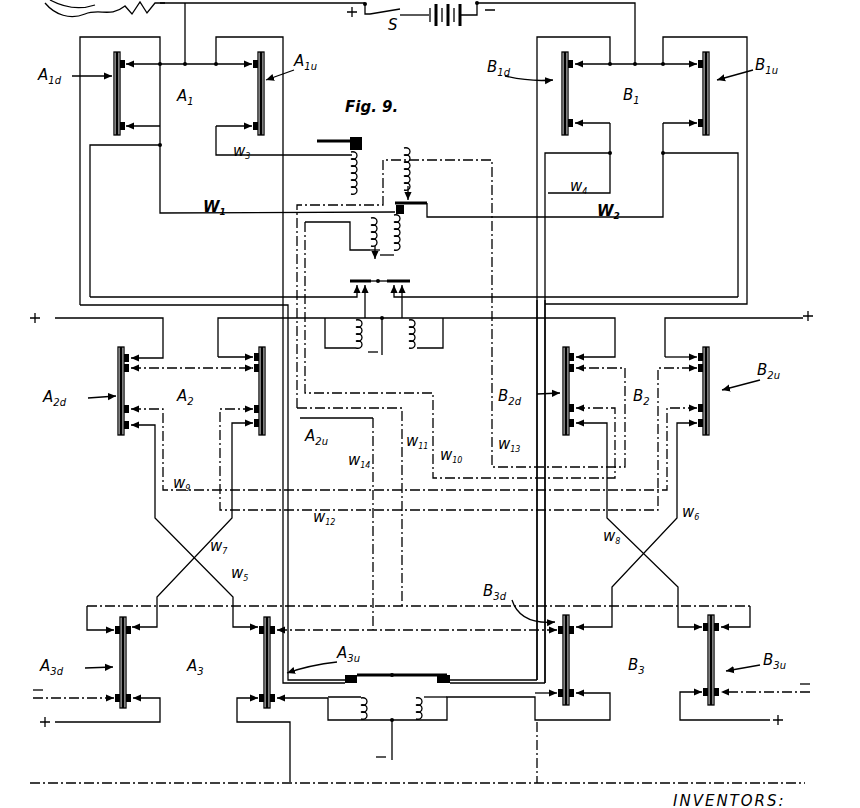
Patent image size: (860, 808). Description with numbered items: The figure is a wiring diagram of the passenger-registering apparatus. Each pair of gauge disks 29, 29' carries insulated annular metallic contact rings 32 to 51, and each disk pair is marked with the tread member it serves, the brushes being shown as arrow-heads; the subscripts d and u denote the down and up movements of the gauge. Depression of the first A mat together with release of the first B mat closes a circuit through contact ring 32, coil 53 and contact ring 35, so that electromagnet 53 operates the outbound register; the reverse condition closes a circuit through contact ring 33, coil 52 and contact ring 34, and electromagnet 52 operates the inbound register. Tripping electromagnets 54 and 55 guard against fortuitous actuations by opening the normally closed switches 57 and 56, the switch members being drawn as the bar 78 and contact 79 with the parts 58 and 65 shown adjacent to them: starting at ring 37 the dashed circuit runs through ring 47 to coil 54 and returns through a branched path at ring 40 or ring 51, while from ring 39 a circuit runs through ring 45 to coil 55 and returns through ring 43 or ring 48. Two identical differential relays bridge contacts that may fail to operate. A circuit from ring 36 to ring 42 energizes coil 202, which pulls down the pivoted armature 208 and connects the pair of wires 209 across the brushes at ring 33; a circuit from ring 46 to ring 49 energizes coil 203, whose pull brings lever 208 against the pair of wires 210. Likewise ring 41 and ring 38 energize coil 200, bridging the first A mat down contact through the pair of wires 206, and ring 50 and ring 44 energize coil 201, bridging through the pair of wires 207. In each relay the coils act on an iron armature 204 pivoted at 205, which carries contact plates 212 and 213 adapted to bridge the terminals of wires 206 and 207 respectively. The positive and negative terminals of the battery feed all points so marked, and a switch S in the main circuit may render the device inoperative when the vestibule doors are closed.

The disk 29 is at (511, 405).
The disk 29' is at (306, 93).
The contact ring 32 is at (125, 96).
The contact ring 33 is at (256, 102).
The contact ring 34 is at (564, 52).
The contact ring 35 is at (708, 92).
The contact ring 36 is at (126, 352).
The contact ring 37 is at (128, 373).
The contact ring 38 is at (257, 352).
The contact ring 39 is at (257, 374).
The contact ring 40 is at (118, 637).
The contact ring 41 is at (135, 640).
The contact ring 42 is at (262, 640).
The contact ring 43 is at (277, 647).
The contact ring 44 is at (573, 352).
The contact ring 45 is at (573, 373).
The contact ring 46 is at (703, 352).
The contact ring 47 is at (702, 374).
The contact ring 48 is at (564, 616).
The contact ring 49 is at (576, 632).
The contact ring 50 is at (708, 634).
The contact ring 51 is at (720, 633).
The electromagnet 52 is at (349, 172).
The electromagnet 53 is at (406, 232).
The tripping electromagnet 54 is at (371, 232).
The tripping electromagnet 55 is at (420, 152).
The switch 56 is at (416, 192).
The switch 57 is at (372, 253).
The armature 58 is at (406, 264).
The contact arm 65 is at (388, 258).
The switch bar 78 is at (343, 140).
The switch contact 79 is at (353, 137).
The relay coil 200 is at (352, 350).
The relay coil 201 is at (413, 350).
The relay coil 202 is at (362, 721).
The relay coil 203 is at (428, 722).
The armature 204 is at (350, 281).
The pivot 205 is at (403, 300).
The pair of wires 206 is at (200, 297).
The pair of wires 207 is at (565, 297).
The pivoted armature 208 is at (375, 673).
The pair of wires 209 is at (288, 723).
The pair of wires 210 is at (545, 652).
The contact plate 212 is at (364, 300).
The contact plate 213 is at (410, 281).